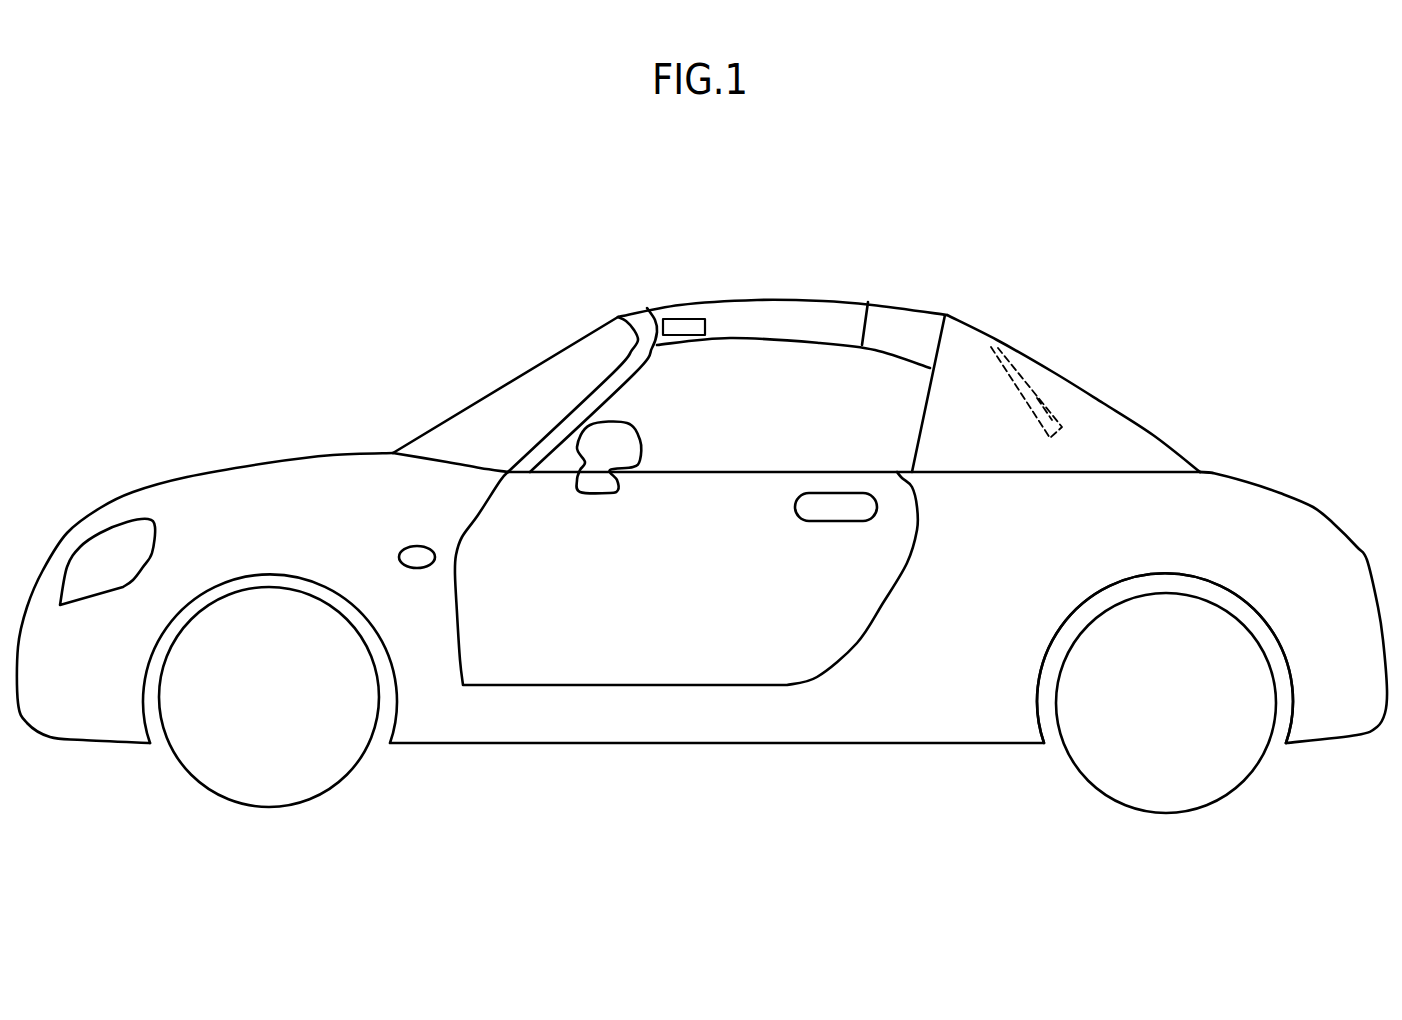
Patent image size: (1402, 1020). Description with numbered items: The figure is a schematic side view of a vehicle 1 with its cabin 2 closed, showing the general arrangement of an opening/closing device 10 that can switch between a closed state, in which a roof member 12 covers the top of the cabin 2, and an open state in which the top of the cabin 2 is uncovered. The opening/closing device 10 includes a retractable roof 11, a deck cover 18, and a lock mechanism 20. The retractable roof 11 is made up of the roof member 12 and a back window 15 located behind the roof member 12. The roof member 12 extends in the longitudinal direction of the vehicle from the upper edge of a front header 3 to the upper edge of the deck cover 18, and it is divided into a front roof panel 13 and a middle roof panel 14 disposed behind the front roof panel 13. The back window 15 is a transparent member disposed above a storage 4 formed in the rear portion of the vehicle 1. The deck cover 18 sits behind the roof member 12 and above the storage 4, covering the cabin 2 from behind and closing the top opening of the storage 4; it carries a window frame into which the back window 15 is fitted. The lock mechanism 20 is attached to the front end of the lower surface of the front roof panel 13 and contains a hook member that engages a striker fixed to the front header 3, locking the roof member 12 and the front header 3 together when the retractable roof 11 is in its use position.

The vehicle 1 is at (356, 266).
The cabin 2 is at (675, 594).
The front header 3 is at (622, 308).
The storage 4 is at (1000, 599).
The opening/closing device 10 is at (1162, 299).
The retractable roof 11 is at (889, 230).
The roof member 12 is at (762, 292).
The front roof panel 13 is at (825, 303).
The middle roof panel 14 is at (905, 307).
The back window 15 is at (1037, 398).
The deck cover 18 is at (1138, 420).
The lock mechanism 20 is at (682, 318).